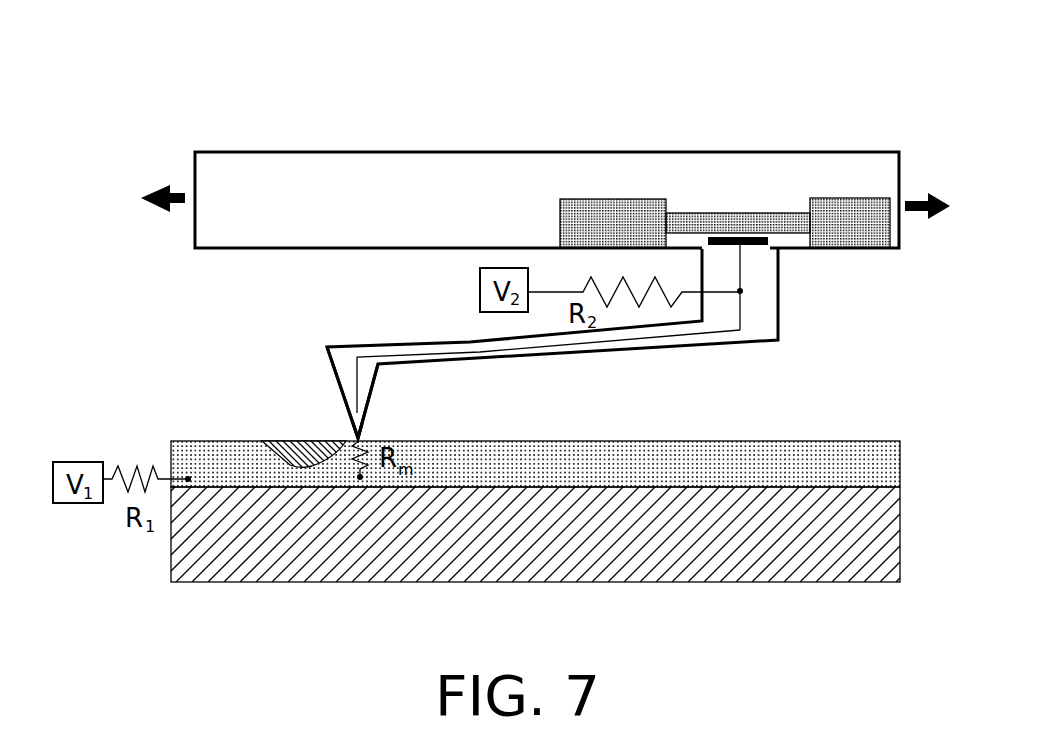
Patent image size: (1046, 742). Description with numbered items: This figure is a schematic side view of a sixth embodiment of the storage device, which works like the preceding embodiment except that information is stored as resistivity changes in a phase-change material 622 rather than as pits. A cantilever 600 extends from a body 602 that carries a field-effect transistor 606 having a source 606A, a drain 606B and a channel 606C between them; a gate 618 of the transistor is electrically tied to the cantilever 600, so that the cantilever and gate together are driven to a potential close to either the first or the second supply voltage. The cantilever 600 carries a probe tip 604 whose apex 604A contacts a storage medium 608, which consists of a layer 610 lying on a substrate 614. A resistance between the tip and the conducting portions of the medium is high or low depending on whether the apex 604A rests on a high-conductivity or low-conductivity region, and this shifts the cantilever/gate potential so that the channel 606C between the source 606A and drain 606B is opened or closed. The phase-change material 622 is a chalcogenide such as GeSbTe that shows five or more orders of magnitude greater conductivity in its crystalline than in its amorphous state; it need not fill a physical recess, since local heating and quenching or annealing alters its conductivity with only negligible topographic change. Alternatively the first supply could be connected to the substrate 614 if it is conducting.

The cantilever 600 is at (492, 343).
The substrate block / carrier 602 is at (360, 165).
The tip 604 is at (348, 382).
The tip apex 604A is at (363, 432).
The transistor 606 is at (716, 124).
The source 606A is at (605, 208).
The drain 606B is at (845, 203).
The channel 606C is at (762, 218).
The sample 608 is at (538, 480).
The sample layer 610 is at (535, 433).
The substrate 614 is at (723, 558).
The gate 618 is at (762, 245).
The phase-change material 622 is at (290, 443).